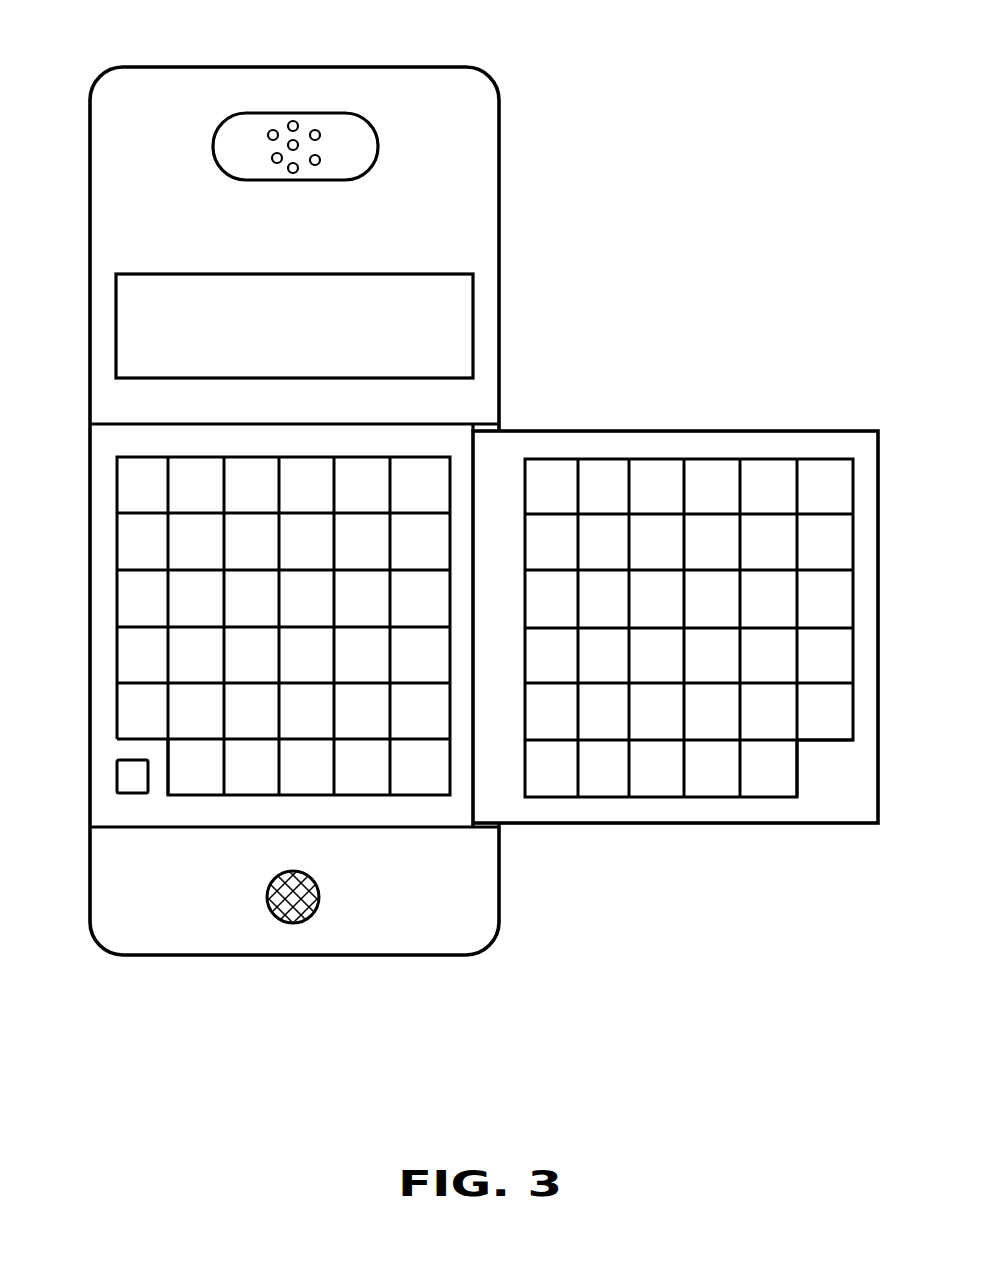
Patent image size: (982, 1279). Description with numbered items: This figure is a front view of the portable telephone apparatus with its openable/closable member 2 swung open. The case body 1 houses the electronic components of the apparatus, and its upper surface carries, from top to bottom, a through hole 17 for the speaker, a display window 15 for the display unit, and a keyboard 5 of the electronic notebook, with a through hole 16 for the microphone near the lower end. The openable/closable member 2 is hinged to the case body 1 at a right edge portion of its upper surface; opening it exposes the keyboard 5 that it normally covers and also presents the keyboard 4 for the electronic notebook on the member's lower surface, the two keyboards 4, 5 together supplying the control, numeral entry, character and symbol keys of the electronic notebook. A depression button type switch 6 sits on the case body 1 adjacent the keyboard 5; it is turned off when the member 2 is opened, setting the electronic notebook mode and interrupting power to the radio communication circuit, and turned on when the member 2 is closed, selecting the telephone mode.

The case body 1 is at (475, 222).
The openable/closable member 2 is at (655, 442).
The keyboard for the electronic notebook 4 is at (663, 782).
The keyboard of the electronic notebook 5 is at (130, 538).
The depression button type switch 6 is at (127, 773).
The display window 15 is at (453, 323).
The through hole for the microphone 16 is at (285, 922).
The through hole for the speaker 17 is at (318, 133).